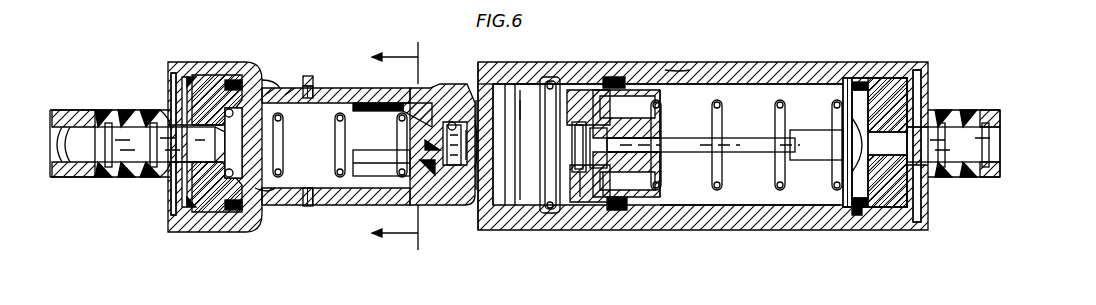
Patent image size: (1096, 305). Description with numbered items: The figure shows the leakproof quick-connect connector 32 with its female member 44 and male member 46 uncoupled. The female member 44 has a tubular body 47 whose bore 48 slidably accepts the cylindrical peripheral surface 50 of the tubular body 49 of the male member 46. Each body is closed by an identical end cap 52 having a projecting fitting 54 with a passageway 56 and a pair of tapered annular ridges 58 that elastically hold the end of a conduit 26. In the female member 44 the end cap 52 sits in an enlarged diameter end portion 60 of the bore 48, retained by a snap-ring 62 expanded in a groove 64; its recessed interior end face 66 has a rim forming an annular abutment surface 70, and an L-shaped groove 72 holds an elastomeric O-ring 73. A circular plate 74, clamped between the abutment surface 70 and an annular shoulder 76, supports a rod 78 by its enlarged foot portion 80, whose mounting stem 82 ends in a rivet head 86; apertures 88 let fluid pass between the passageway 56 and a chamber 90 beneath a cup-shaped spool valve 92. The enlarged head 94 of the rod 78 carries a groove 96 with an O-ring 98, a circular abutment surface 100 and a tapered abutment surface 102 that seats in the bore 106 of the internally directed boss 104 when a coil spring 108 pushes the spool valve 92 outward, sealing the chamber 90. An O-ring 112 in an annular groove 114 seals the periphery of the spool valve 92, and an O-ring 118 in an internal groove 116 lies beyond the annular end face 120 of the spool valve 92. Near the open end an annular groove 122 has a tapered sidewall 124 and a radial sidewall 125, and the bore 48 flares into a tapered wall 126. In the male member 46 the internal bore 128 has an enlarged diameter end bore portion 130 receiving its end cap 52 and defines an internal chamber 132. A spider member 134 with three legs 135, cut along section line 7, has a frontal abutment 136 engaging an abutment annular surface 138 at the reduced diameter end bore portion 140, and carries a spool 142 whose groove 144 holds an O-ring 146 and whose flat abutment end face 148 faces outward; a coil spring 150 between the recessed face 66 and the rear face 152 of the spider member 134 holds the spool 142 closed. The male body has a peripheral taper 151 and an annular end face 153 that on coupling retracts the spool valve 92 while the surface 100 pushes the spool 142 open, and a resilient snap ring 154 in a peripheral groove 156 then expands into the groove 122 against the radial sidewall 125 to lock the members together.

The section line 7- 7 is at (380, 146).
The conduit 26 is at (78, 108).
The leakproof quick-connect connector 32 is at (598, 62).
The female member 44 is at (785, 230).
The male member 46 is at (290, 88).
The tubular body 47 is at (705, 70).
The bore 48 is at (725, 205).
The tubular body 49 is at (302, 88).
The cylindrical peripheral surface 50 is at (325, 205).
The end cap 52 is at (210, 75).
The fitting 54 is at (112, 128).
The passageway 56 is at (195, 128).
The tapered annular ridges 58 is at (153, 168).
The enlarged diameter end portion 60 is at (872, 78).
The snap-ring 62 is at (192, 77).
The groove 64 is at (175, 232).
The interior end face 66 is at (238, 212).
The annular abutment surface 70 is at (843, 92).
The L-shaped groove 72 is at (856, 215).
The elastomeric O-ring 73 is at (858, 80).
The circular plate 74 is at (855, 160).
The annular shoulder 76 is at (845, 212).
The rod 78 is at (758, 136).
The enlarged foot portion 80 is at (795, 152).
The mounting stem 82 is at (825, 153).
The rivet head 86 is at (887, 181).
The apertures 88 is at (887, 105).
The chamber 90 is at (670, 84).
The spool valve 92 is at (665, 200).
The enlarged head 94 is at (610, 122).
The groove 96 is at (610, 172).
The elastomeric O-ring 98 is at (590, 200).
The circular abutment surface 100 is at (590, 150).
The tapered abutment surface 102 is at (612, 148).
The boss 104 is at (605, 202).
The bore 106 is at (572, 128).
The coil spring 108 is at (662, 104).
The elastomeric O-ring 112 is at (630, 84).
The annular groove 114 is at (655, 205).
The internal groove 116 is at (568, 90).
The elastomeric O-ring 118 is at (550, 213).
The annular end face 120 is at (585, 90).
The annular groove 122 is at (516, 205).
The tapered sidewall 124 is at (548, 80).
The radial sidewall 125 is at (495, 270).
The tapered wall 126 is at (505, 205).
The internal bore 128 is at (270, 194).
The enlarged diameter end bore portion 130 is at (226, 215).
The internal chamber 132 is at (240, 75).
The spider member 134 is at (368, 176).
The legs 135 is at (400, 102).
The frontal abutment 136 is at (446, 103).
The abutment annular surface 138 is at (405, 192).
The reduced diameter end bore portion 140 is at (474, 205).
The spool 142 is at (442, 190).
The groove 144 is at (447, 142).
The elastomeric O-ring 146 is at (440, 125).
The flat abutment end face 148 is at (453, 122).
The coil spring 150 is at (268, 80).
The peripheral taper 151 is at (486, 62).
The rear face 152 is at (375, 128).
The annular end face 153 is at (468, 205).
The resilient snap ring 154 is at (310, 76).
The peripheral groove 156 is at (314, 88).